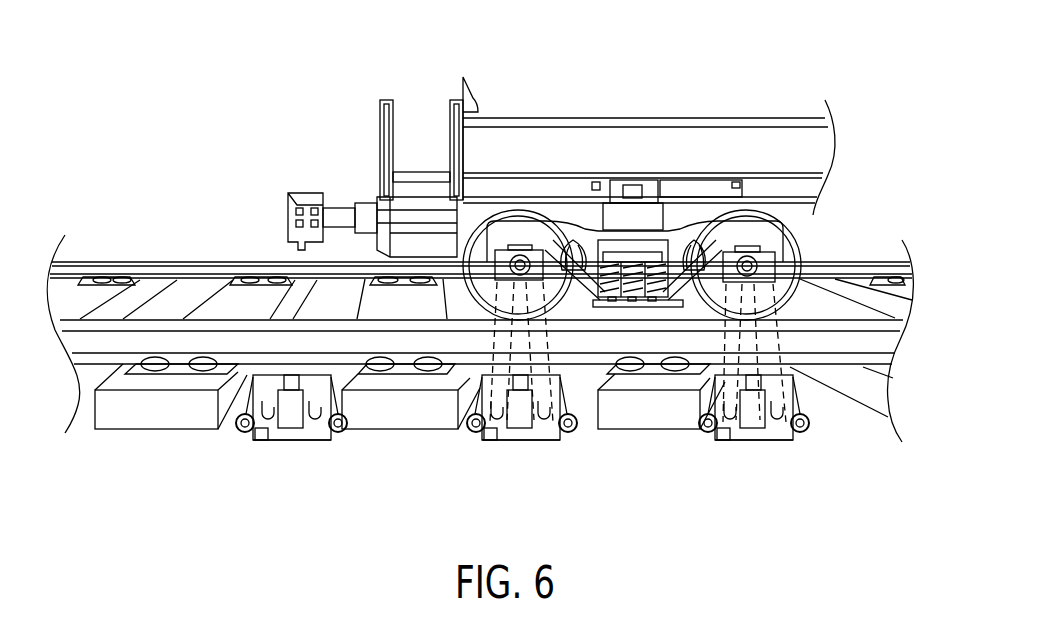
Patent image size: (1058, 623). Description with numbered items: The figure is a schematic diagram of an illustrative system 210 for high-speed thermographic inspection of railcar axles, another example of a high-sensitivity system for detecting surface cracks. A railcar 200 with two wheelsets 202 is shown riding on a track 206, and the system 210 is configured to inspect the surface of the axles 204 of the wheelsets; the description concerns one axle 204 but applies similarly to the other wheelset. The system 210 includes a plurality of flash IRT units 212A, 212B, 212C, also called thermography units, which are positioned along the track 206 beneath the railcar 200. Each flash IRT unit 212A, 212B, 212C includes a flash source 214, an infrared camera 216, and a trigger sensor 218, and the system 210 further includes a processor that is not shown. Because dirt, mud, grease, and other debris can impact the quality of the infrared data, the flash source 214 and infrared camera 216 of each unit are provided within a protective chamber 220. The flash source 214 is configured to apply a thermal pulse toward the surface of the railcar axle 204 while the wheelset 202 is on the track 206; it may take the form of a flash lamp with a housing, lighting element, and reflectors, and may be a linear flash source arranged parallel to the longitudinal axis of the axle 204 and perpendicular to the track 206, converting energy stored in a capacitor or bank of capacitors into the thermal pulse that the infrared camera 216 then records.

The railcar 200 is at (707, 117).
The wheelset 202 is at (515, 207).
The axle 204 is at (528, 247).
The track 206 is at (887, 352).
The high speed railcar axle inspection system 210 is at (712, 460).
The flash IRT unit 212A is at (745, 455).
The flash IRT unit 212B is at (525, 455).
The flash IRT unit 212C is at (285, 455).
The flash source 214 is at (337, 433).
The infrared camera 216 is at (291, 429).
The trigger sensor 218 is at (253, 437).
The protective chamber 220 is at (270, 442).